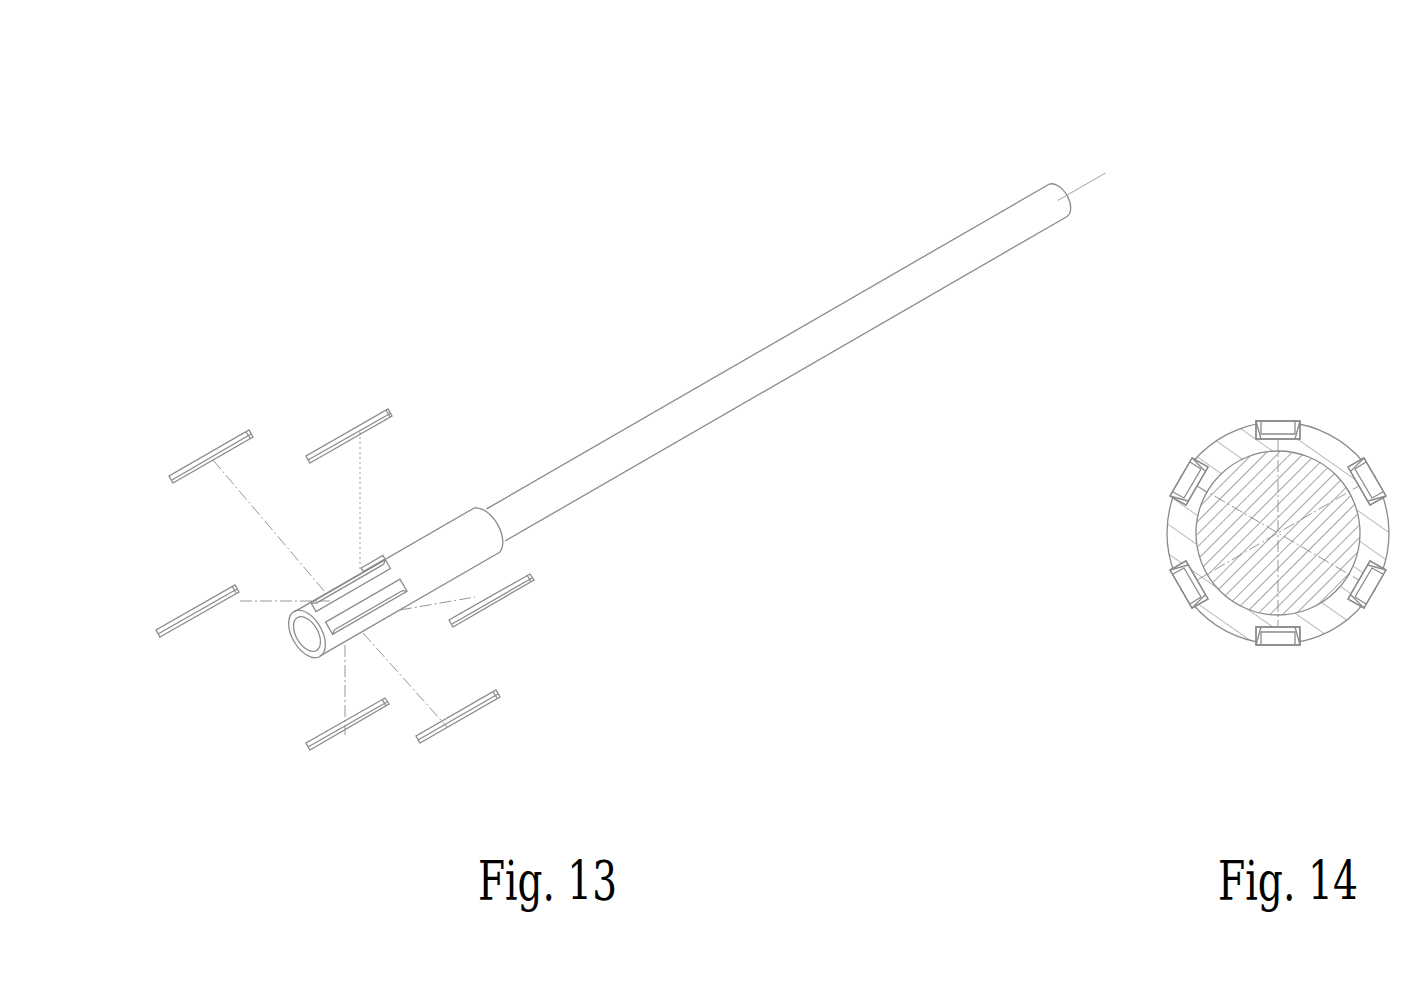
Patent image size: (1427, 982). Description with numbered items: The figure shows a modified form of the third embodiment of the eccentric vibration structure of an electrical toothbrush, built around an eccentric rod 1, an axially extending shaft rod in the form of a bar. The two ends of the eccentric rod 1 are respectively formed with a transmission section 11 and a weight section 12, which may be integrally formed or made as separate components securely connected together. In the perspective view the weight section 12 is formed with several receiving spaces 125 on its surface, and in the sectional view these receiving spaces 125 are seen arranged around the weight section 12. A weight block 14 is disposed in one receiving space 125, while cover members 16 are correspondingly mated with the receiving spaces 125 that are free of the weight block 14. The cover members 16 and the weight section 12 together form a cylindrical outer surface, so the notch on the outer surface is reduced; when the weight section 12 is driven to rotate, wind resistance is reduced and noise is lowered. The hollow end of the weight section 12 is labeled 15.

In FIG. 13, the eccentric rod 1 is at (347, 178).
In FIG. 14, the eccentric rod 1 is at (1240, 530).
In FIG. 13, the transmission section 11 is at (866, 422).
In FIG. 13, the weight section 12 is at (652, 740).
In FIG. 14, the weight section 12 is at (1227, 615).
In FIG. 13, the weight block 14 is at (352, 430).
In FIG. 14, the weight block 14 is at (1268, 428).
In FIG. 13, the bore 15 is at (306, 637).
In FIG. 13, the cover member 16 is at (212, 455).
In FIG. 14, the cover member 16 is at (1183, 588).
In FIG. 13, the receiving space 125 is at (362, 572).
In FIG. 14, the receiving space 125 is at (1180, 482).